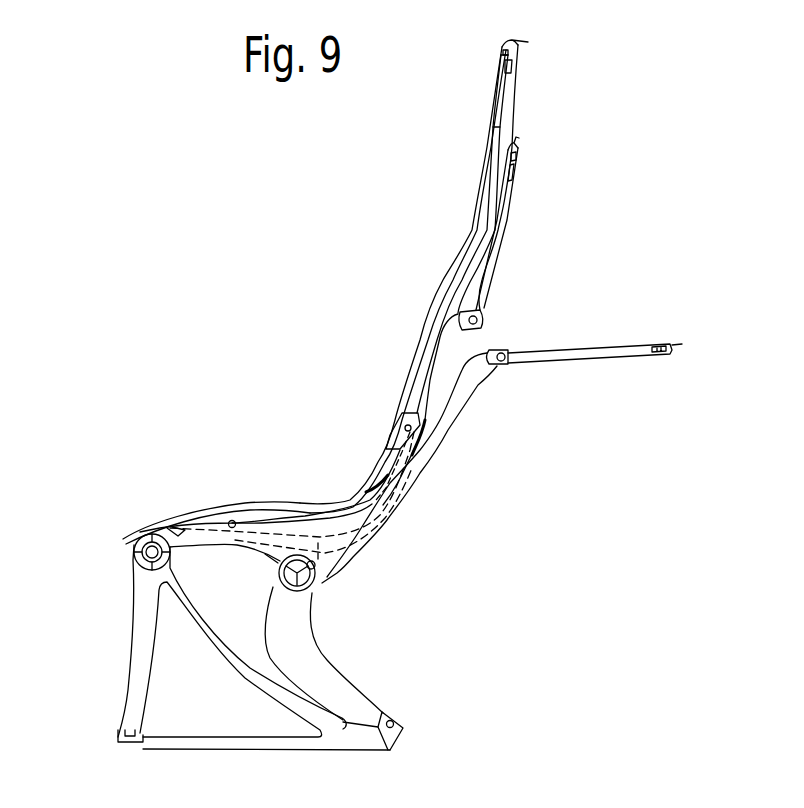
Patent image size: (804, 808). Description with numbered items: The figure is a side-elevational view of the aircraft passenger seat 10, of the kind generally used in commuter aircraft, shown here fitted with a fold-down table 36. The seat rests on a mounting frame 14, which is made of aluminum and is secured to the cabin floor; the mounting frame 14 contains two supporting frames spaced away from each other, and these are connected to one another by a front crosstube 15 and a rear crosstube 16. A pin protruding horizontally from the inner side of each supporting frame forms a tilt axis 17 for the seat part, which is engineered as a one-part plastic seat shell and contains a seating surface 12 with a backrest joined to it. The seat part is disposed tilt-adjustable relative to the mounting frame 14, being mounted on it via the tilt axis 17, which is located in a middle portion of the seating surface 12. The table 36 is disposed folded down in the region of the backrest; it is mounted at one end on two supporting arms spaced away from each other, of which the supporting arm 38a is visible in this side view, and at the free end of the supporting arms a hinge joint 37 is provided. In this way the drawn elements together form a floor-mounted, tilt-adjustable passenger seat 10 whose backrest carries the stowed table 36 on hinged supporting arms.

The aircraft passenger seat 10 is at (341, 382).
The seating surface 12 is at (290, 494).
The mounting frame 14 is at (133, 660).
The front crosstube 15 is at (133, 555).
The rear crosstube 16 is at (313, 577).
The tilt axis 17 is at (232, 520).
The table 36 is at (497, 232).
The hinge joint 37 is at (503, 364).
The supporting arm 38a is at (428, 458).